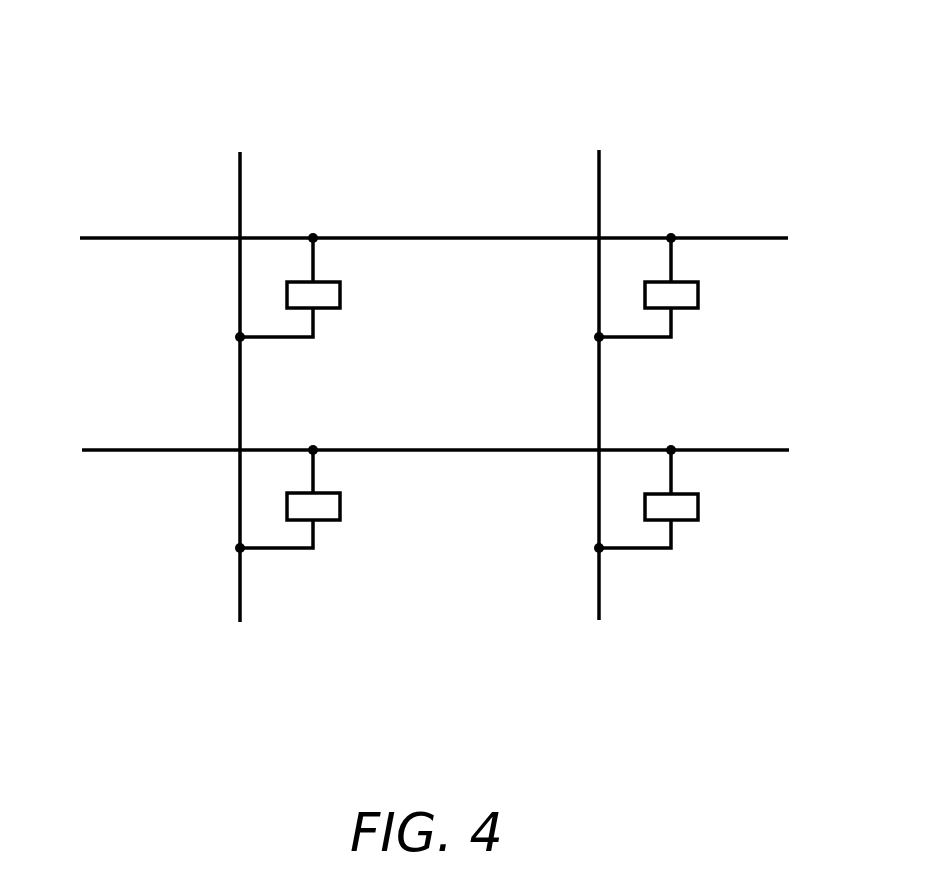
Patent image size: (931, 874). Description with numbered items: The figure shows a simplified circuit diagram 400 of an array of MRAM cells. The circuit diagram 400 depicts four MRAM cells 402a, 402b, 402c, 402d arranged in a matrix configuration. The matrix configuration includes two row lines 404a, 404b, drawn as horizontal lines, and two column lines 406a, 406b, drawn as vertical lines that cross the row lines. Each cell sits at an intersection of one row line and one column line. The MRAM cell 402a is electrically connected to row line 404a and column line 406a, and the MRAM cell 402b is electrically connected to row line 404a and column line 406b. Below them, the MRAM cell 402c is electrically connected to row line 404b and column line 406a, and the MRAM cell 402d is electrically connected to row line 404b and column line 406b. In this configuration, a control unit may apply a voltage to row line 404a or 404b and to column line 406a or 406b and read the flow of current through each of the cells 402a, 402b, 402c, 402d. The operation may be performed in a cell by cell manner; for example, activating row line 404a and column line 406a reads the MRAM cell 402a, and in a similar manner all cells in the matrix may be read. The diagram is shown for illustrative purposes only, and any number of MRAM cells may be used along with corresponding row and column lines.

The simplified circuit diagram 400 is at (194, 112).
The MRAM cell 402a is at (340, 297).
The MRAM cell 402b is at (698, 297).
The MRAM cell 402c is at (340, 509).
The MRAM cell 402d is at (698, 510).
The row line 404a is at (102, 238).
The row line 404b is at (107, 450).
The column line 406a is at (240, 188).
The column line 406b is at (599, 183).